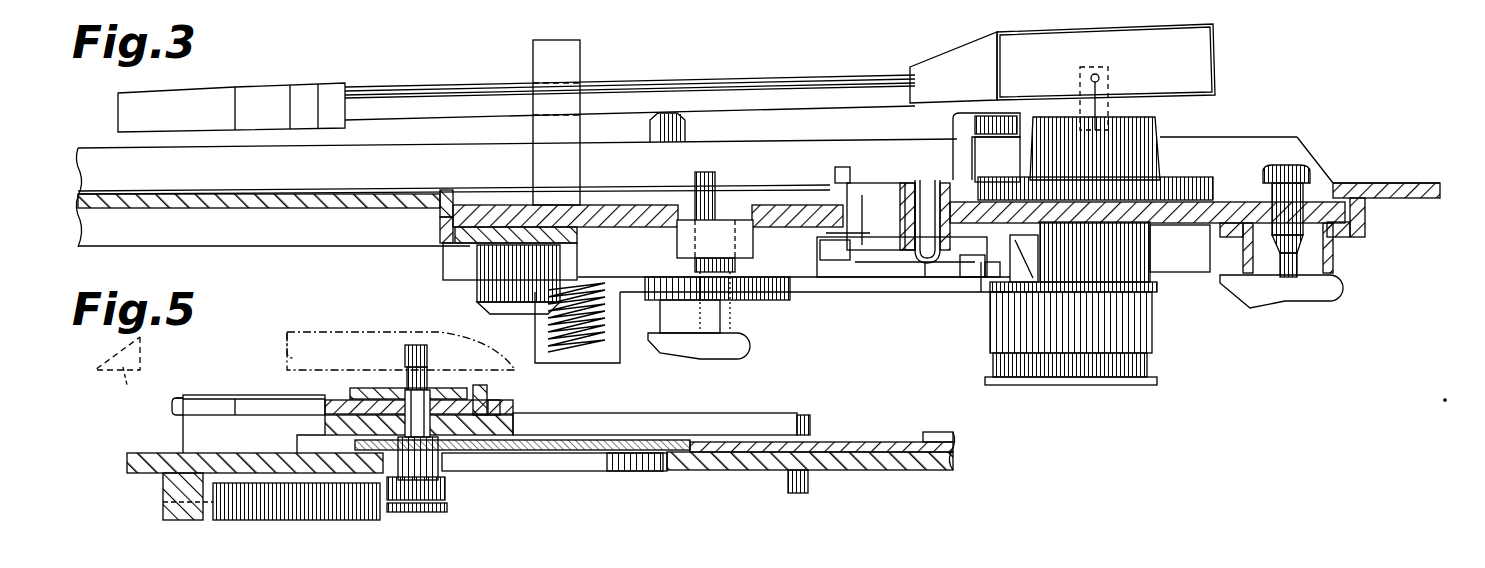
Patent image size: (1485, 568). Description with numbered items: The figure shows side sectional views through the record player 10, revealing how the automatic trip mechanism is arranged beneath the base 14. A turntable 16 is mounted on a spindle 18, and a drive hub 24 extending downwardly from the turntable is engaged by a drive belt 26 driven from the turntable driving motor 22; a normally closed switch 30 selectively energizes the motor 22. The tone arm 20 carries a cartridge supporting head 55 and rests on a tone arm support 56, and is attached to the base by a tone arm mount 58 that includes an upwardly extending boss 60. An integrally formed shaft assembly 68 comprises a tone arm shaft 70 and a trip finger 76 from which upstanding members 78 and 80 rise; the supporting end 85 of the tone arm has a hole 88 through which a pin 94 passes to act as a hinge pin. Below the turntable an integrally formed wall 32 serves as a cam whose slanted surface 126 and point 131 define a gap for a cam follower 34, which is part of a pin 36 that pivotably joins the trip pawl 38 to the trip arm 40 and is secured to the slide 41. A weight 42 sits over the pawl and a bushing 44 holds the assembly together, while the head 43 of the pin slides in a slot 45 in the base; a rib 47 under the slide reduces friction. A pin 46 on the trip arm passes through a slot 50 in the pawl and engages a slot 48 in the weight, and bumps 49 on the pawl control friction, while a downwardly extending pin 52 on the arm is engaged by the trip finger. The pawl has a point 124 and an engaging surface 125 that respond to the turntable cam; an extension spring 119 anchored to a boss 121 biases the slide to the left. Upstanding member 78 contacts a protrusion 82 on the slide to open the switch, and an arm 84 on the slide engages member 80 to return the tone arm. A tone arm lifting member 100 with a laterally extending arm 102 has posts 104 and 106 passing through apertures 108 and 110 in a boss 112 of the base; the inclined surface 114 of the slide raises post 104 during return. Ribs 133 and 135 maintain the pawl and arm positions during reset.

In FIG. 3, the record player 10 is at (374, 33).
In FIG. 3, the base 14 is at (190, 208).
In FIG. 5, the base 14 is at (955, 455).
In FIG. 3, the turntable 16 is at (105, 158).
In FIG. 3, the spindle 18 is at (651, 128).
In FIG. 3, the tone arm 20 is at (492, 85).
In FIG. 3, the turntable driving motor 22 is at (1152, 327).
In FIG. 3, the drive hub 24 is at (441, 233).
In FIG. 3, the drive belt 26 is at (438, 213).
In FIG. 3, the normally closed switch 30 is at (822, 253).
In FIG. 5, the wall 32 is at (330, 328).
In FIG. 5, the cam follower 34 is at (415, 350).
In FIG. 5, the pin 36 is at (445, 455).
In FIG. 5, the trip pawl 38 is at (254, 390).
In FIG. 5, the trip arm 40 is at (720, 413).
In FIG. 3, the slide 41 is at (862, 245).
In FIG. 5, the slide 41 is at (605, 428).
In FIG. 5, the weight 42 is at (378, 388).
In FIG. 3, the head 43 is at (770, 325).
In FIG. 5, the head 43 is at (448, 485).
In FIG. 5, the bushing 44 is at (438, 388).
In FIG. 5, the slot 45 is at (575, 470).
In FIG. 5, the pin 46 is at (493, 385).
In FIG. 5, the rib 47 is at (835, 442).
In FIG. 5, the slot 48 is at (462, 388).
In FIG. 5, the bumps 49 is at (375, 398).
In FIG. 5, the slot 50 is at (497, 405).
In FIG. 3, the pin 52 is at (902, 280).
In FIG. 5, the pin 52 is at (810, 487).
In FIG. 3, the cartridge supporting head 55 is at (280, 88).
In FIG. 3, the tone arm support 56 is at (556, 45).
In FIG. 3, the tone arm mount 58 is at (1230, 128).
In FIG. 3, the boss 60 is at (1158, 130).
In FIG. 3, the shaft assembly 68 is at (1164, 268).
In FIG. 3, the tone arm shaft 70 is at (1152, 242).
In FIG. 3, the trip finger 76 is at (805, 290).
In FIG. 3, the upstanding member 78 is at (981, 268).
In FIG. 3, the upstanding member 80 is at (1033, 253).
In FIG. 3, the protrusion 82 is at (985, 270).
In FIG. 3, the arm 84 is at (995, 182).
In FIG. 3, the supporting end 85 is at (1197, 62).
In FIG. 3, the hole 88 is at (1092, 78).
In FIG. 3, the pin 94 is at (1105, 78).
In FIG. 3, the tone arm lifting member 100 is at (950, 125).
In FIG. 3, the laterally extending arm 102 is at (850, 170).
In FIG. 3, the post 104 is at (925, 255).
In FIG. 3, the post 106 is at (826, 233).
In FIG. 3, the aperture 108 is at (940, 185).
In FIG. 3, the aperture 110 is at (898, 195).
In FIG. 3, the boss 112 is at (830, 200).
In FIG. 3, the inclined surface 114 is at (893, 260).
In FIG. 3, the extension spring 119 is at (750, 345).
In FIG. 5, the extension spring 119 is at (363, 520).
In FIG. 3, the boss 121 is at (705, 330).
In FIG. 5, the boss 121 is at (165, 488).
In FIG. 5, the point 124 is at (176, 405).
In FIG. 5, the engaging surface 125 is at (170, 405).
In FIG. 5, the slanted surface 126 is at (110, 376).
In FIG. 5, the point 131 is at (292, 327).
In FIG. 5, the rib 133 is at (197, 430).
In FIG. 5, the rib 135 is at (928, 431).